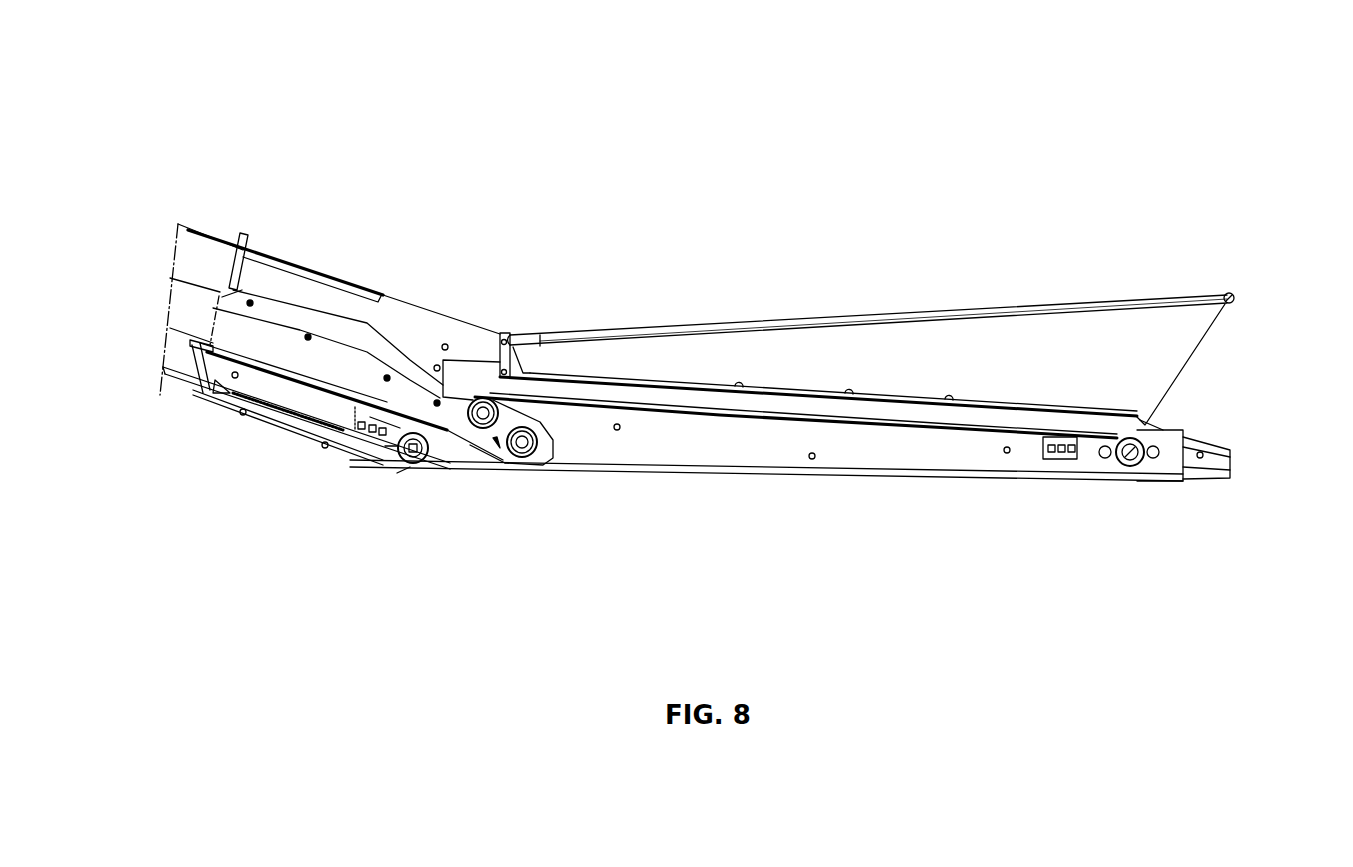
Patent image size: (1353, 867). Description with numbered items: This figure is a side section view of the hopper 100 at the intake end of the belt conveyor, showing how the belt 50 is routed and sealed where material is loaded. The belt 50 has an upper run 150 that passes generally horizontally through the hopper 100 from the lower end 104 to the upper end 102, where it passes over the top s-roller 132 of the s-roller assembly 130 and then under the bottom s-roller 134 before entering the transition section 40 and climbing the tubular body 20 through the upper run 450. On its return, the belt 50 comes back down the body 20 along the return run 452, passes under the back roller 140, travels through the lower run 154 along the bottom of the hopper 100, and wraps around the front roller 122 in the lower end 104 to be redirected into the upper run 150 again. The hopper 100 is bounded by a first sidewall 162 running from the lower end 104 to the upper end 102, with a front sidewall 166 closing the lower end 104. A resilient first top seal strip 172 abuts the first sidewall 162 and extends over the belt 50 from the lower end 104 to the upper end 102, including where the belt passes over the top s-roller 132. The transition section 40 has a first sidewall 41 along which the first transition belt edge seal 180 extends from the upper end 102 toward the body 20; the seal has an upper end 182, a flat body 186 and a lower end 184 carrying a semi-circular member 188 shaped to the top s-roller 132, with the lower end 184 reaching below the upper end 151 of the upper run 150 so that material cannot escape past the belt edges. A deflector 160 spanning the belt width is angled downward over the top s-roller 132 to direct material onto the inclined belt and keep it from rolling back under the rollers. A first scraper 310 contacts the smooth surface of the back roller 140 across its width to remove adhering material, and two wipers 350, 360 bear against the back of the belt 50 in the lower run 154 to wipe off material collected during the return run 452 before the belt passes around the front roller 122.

The tubular body 20 is at (191, 232).
The transition section 40 is at (333, 278).
The first sidewall 41 is at (400, 322).
The belt 50 is at (853, 465).
The hopper 100 is at (1000, 210).
The upper end 102 is at (503, 325).
The lower end 104 is at (1240, 293).
The front roller 122 is at (1140, 467).
The s-roller assembly 130 is at (497, 444).
The top s-roller 132 is at (432, 445).
The bottom s-roller 134 is at (535, 448).
The back roller 140 is at (399, 459).
The upper run 150 is at (682, 405).
The upper end 151 is at (472, 397).
The lower run 154 is at (948, 468).
The deflector 160 is at (395, 441).
The first sidewall 162 is at (800, 353).
The front sidewall 166 is at (1190, 350).
The first top seal strip 172 is at (1032, 427).
The first transition belt edge seal 180 is at (338, 358).
The upper end 182 is at (217, 298).
The lower end 184 is at (514, 456).
The flat body 186 is at (280, 332).
The semi-circular member 188 is at (480, 432).
The first scraper 310 is at (470, 437).
The wiper 350 is at (463, 412).
The wiper 360 is at (1053, 460).
The upper run 450 is at (185, 335).
The return run 452 is at (200, 380).